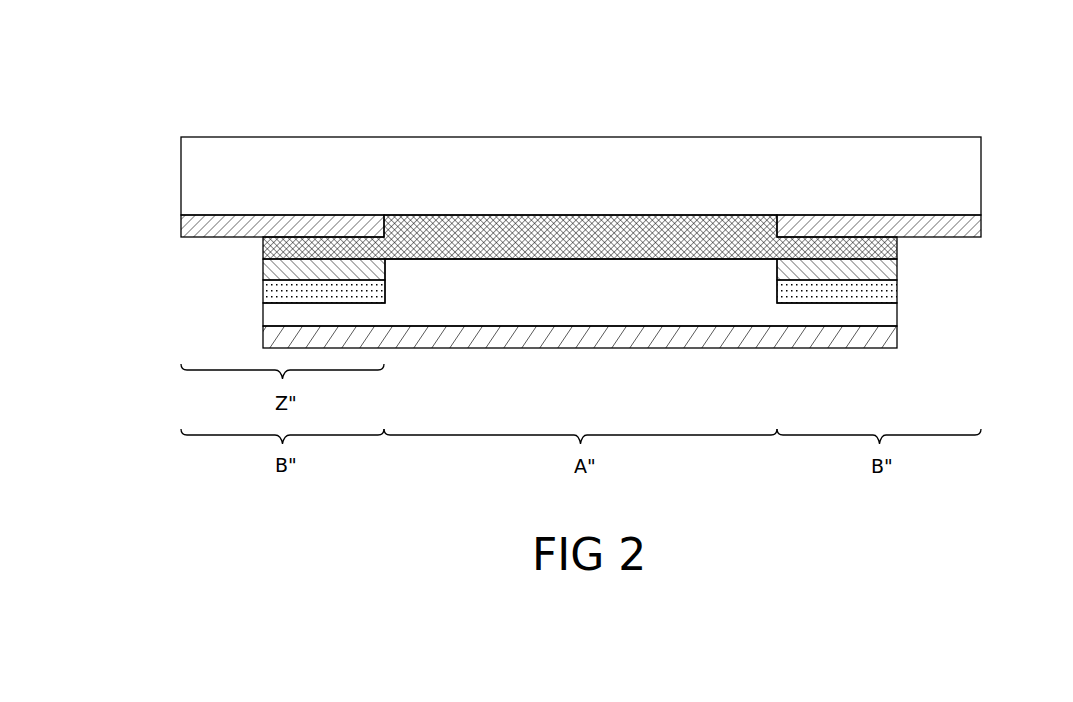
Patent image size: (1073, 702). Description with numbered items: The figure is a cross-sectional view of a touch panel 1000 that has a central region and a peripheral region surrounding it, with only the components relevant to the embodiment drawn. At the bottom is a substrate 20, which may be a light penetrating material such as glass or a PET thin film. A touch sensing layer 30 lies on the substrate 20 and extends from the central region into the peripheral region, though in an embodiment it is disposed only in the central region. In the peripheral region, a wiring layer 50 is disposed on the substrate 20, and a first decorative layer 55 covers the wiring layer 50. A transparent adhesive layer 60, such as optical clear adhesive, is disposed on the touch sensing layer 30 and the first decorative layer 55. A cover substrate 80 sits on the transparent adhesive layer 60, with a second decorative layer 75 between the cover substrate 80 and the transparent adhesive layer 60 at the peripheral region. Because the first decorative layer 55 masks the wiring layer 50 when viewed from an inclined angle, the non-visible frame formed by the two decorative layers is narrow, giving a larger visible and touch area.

The touch panel 1000 is at (979, 106).
The cover substrate 80 is at (962, 176).
The second decorative layer 75 is at (968, 224).
The transparent adhesive layer 60 is at (895, 247).
The first decorative layer 55 is at (884, 271).
The wiring layer 50 is at (880, 293).
The touch sensing layer 30 is at (880, 314).
The substrate 20 is at (880, 338).